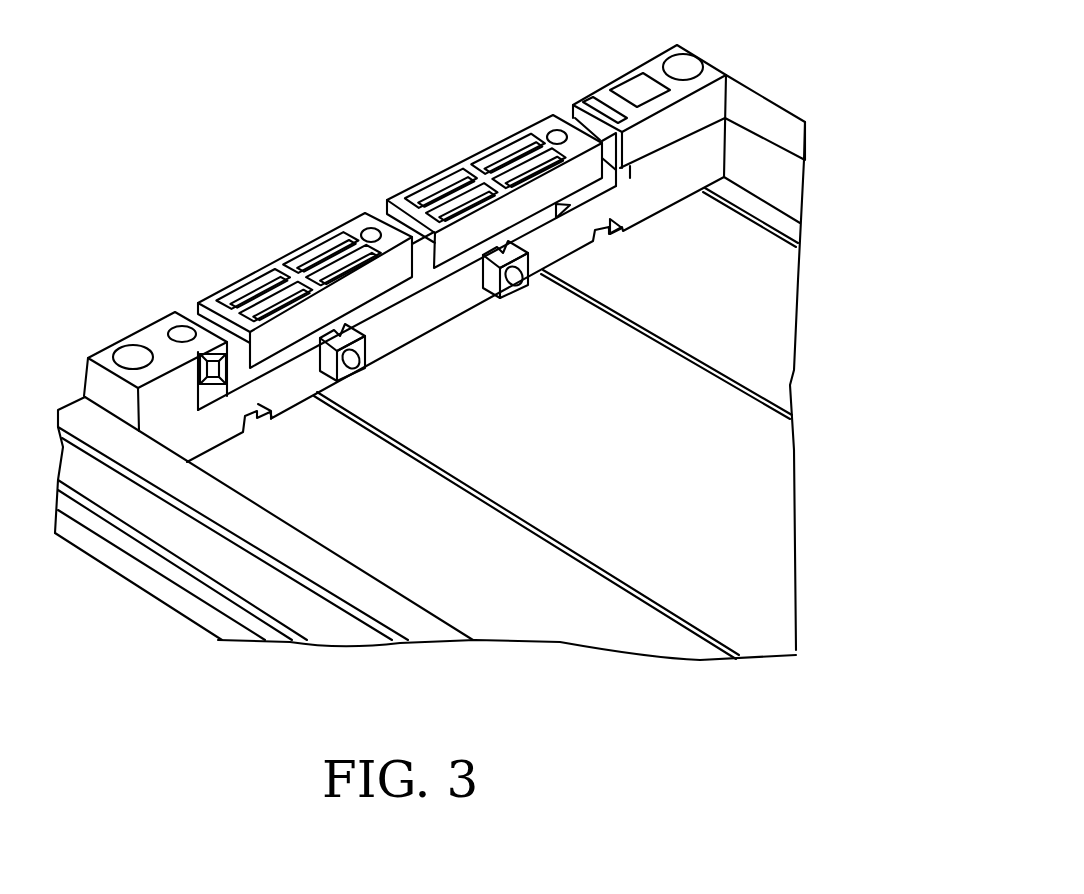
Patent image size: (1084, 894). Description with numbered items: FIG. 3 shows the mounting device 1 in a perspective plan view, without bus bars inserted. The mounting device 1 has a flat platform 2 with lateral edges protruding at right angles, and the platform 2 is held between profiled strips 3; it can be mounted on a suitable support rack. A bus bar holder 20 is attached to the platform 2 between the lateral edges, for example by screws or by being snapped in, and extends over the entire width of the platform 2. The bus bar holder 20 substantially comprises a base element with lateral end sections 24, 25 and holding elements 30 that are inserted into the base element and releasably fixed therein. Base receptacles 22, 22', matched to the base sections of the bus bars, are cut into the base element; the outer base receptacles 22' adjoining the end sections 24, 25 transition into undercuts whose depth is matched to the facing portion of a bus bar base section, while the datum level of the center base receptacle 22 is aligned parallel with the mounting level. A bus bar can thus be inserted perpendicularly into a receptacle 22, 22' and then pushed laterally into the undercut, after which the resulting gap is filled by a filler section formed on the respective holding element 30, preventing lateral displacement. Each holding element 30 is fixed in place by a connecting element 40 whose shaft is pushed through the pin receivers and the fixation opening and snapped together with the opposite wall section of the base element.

The mounting device 1 is at (219, 246).
The platform 2 is at (673, 531).
The profiled strips 3 is at (83, 540).
The bus bar holder 20 is at (444, 316).
The base receptacle 22 is at (636, 196).
The base receptacle 22' is at (276, 405).
The end section 24 is at (150, 328).
The end section 25 is at (616, 78).
The holding element 30 is at (420, 180).
The connecting element 40 is at (512, 300).